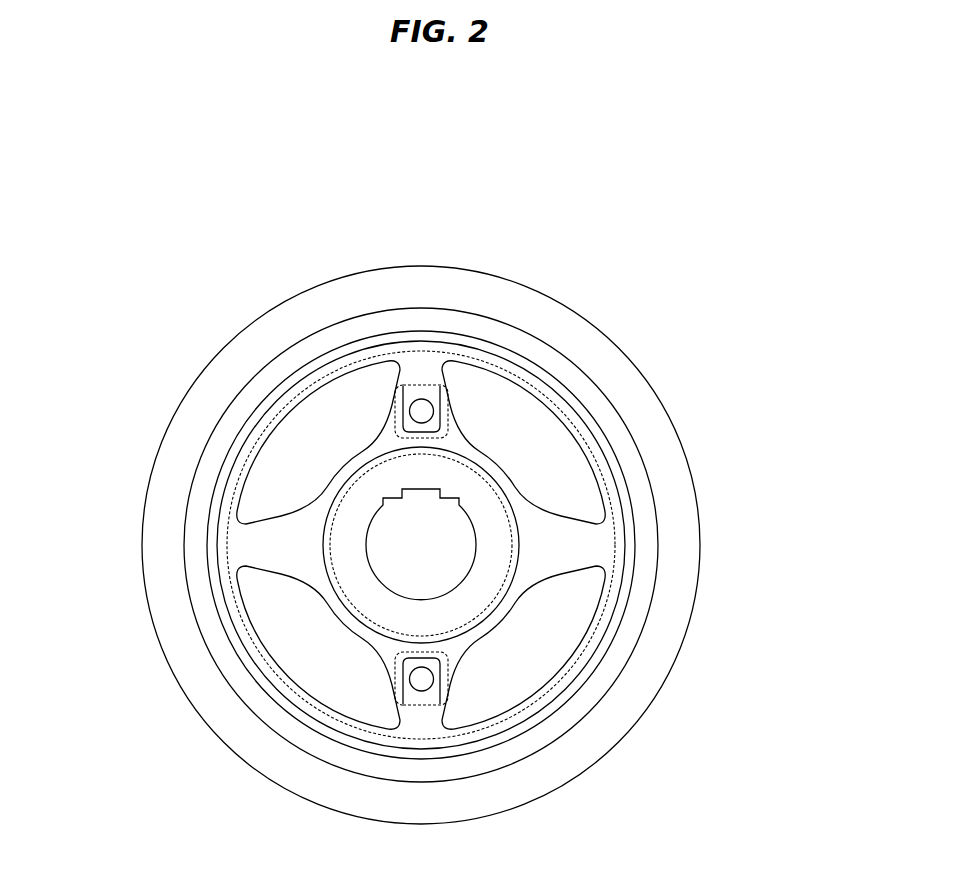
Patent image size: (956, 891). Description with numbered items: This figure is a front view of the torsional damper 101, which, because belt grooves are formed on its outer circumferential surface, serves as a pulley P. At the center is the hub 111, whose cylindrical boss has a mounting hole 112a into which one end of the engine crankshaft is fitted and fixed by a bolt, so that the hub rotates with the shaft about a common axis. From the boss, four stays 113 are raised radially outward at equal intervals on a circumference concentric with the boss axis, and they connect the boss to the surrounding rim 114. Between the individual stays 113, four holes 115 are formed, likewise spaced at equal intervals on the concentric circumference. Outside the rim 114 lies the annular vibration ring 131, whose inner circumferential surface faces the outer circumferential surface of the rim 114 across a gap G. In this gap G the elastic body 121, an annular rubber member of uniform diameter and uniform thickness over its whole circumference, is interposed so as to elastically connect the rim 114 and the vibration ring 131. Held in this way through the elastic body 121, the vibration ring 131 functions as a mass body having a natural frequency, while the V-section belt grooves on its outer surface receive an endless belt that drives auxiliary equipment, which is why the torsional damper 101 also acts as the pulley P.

The torsional damper 101 is at (213, 257).
The pulley P is at (703, 270).
The hub 111 is at (483, 337).
The mounting hole 112a is at (365, 553).
The stays 113 is at (398, 380).
The rim 114 is at (242, 642).
The holes 115 is at (582, 647).
The elastic body 121 is at (643, 555).
The vibration ring 131 is at (680, 662).
The gap G is at (617, 432).